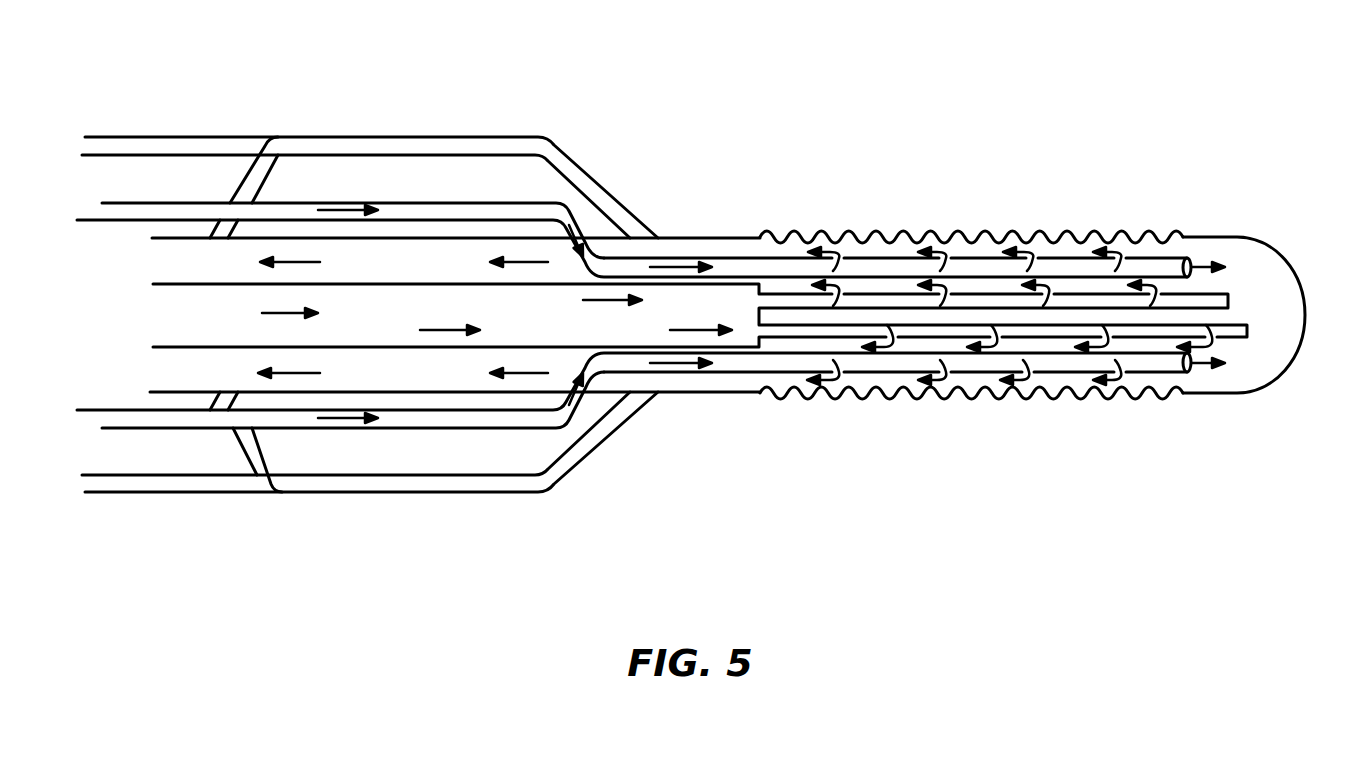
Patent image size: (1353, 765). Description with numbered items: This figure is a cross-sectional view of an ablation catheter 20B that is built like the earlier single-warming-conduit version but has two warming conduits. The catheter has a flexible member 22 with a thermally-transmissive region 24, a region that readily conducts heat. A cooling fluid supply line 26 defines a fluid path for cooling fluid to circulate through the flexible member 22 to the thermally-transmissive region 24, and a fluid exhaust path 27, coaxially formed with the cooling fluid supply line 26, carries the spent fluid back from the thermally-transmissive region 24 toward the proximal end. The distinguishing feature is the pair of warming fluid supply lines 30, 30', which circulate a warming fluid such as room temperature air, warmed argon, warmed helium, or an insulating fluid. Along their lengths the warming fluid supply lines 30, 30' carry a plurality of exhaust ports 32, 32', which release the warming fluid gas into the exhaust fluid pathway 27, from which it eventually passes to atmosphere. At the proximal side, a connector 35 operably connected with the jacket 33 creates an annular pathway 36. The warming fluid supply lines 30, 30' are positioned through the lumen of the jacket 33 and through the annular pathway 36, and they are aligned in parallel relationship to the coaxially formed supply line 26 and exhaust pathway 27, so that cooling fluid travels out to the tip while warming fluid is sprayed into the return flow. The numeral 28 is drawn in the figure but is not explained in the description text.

The ablation catheter 20B is at (1248, 203).
The flexible member 22 is at (1095, 208).
The thermally-transmissive region 24 is at (942, 240).
The cooling fluid supply line 26 is at (355, 333).
The fluid exhaust path 27 is at (405, 277).
The inner lumen 28 is at (863, 250).
The warming fluid supply line 30 is at (651, 220).
The warming fluid supply line 30' is at (651, 410).
The exhaust ports 32 is at (984, 234).
The exhaust ports 32' is at (1009, 394).
The jacket 33 is at (176, 136).
The connector 35 is at (563, 152).
The annular pathway 36 is at (398, 191).